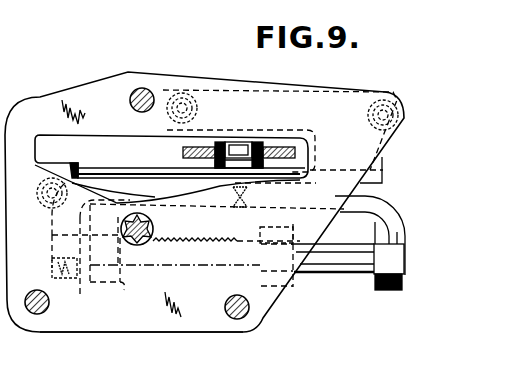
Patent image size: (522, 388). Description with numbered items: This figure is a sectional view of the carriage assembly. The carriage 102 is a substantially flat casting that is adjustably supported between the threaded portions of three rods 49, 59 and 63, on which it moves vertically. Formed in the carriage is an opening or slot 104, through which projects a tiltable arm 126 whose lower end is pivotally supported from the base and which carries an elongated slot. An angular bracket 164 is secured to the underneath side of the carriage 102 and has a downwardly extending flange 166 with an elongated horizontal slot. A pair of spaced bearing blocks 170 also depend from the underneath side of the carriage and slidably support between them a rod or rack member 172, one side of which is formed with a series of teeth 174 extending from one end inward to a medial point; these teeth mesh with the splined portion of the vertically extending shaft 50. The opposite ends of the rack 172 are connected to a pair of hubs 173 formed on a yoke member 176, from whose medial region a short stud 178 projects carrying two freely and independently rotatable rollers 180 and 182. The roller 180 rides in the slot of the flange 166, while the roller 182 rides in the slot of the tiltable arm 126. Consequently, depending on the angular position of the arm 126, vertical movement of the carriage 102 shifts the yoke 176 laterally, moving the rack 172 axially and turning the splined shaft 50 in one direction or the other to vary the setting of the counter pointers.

The rod 49 is at (137, 92).
The opening or slot 104 is at (55, 120).
The roller 182 is at (225, 143).
The tiltable arm 126 is at (282, 147).
The angular bracket 164 is at (91, 148).
The downwardly extending flange 166 is at (118, 165).
The roller 180 is at (217, 162).
The yoke member 176 is at (392, 207).
The vertically extending shaft 50 is at (152, 228).
The teeth 174 is at (207, 226).
The stud 178 is at (268, 228).
The rod or rack member 172 is at (348, 274).
The hubs 173 is at (401, 277).
The bearing blocks 170 is at (123, 284).
The rod 63 is at (35, 314).
The carriage 102 is at (151, 341).
The rod 59 is at (238, 318).